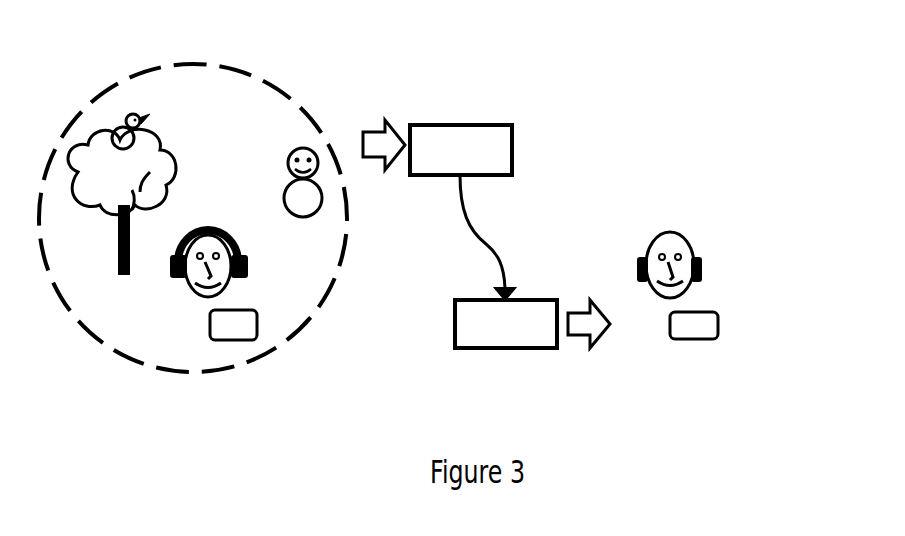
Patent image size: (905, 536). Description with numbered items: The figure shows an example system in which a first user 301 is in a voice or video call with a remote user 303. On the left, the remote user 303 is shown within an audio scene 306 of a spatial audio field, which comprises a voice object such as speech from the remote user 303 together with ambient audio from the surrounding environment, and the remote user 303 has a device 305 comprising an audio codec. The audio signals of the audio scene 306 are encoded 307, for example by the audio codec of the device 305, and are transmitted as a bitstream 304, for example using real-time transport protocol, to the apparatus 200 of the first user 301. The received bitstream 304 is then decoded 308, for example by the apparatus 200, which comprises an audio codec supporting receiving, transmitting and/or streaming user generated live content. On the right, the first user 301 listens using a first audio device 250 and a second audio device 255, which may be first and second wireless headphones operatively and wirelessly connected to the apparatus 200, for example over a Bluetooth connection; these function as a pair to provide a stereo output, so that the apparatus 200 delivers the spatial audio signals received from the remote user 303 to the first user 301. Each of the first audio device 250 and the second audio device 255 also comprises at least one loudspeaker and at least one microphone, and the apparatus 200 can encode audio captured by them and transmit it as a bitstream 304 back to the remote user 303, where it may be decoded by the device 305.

The audio scene 306 is at (240, 68).
The remote user 303 is at (210, 228).
The device 305 is at (257, 316).
The encoding 307 is at (475, 125).
The bitstream 304 is at (497, 251).
The decoding 308 is at (504, 349).
The first user 301 is at (675, 242).
The first audio device 250 is at (638, 272).
The second audio device 255 is at (702, 266).
The apparatus 200 is at (718, 322).